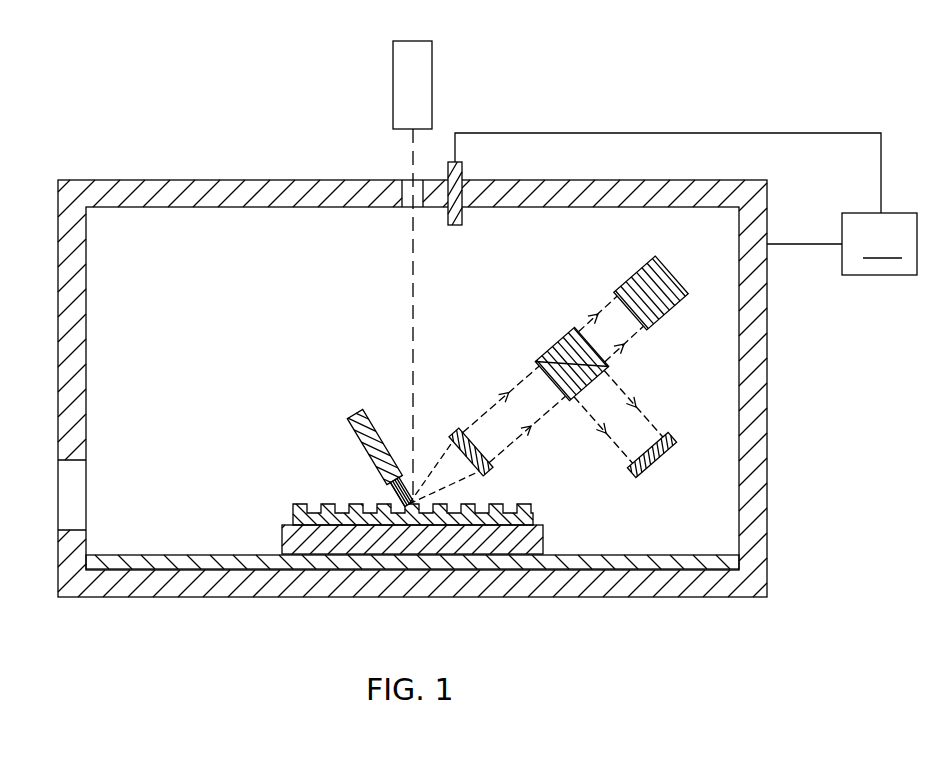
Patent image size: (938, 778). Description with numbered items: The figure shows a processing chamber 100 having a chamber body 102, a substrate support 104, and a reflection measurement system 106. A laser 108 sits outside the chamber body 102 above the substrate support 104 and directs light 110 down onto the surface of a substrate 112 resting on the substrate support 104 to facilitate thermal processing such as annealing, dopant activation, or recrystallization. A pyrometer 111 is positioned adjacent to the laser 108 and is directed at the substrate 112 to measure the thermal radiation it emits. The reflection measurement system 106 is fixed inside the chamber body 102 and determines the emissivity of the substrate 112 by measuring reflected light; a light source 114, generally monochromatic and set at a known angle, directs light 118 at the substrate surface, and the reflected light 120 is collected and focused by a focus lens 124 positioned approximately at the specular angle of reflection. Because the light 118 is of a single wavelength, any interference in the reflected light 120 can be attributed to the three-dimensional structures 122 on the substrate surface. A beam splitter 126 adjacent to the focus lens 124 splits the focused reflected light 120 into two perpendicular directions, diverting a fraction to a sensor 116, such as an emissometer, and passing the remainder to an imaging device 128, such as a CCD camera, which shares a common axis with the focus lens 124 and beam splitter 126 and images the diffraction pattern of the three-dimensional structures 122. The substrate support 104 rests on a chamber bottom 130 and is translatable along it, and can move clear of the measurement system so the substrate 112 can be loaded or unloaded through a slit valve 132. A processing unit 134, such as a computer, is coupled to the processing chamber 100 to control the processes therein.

The processing chamber 100 is at (692, 69).
The chamber body 102 is at (768, 436).
The substrate support 104 is at (544, 540).
The reflection measurement system 106 is at (592, 260).
The laser 108 is at (432, 68).
The light 110 is at (422, 278).
The pyrometer 111 is at (462, 210).
The substrate 112 is at (534, 512).
The light source 114 is at (360, 445).
The sensor 116 is at (657, 458).
The light 118 is at (383, 495).
The reflected light 120 is at (422, 456).
The 3D structures 122 is at (296, 504).
The focus lens 124 is at (490, 474).
The beam splitter 126 is at (552, 348).
The imaging device 128 is at (663, 322).
The chamber bottom 130 is at (676, 555).
The slit valve 132 is at (106, 477).
The processing unit 134 is at (686, 204).